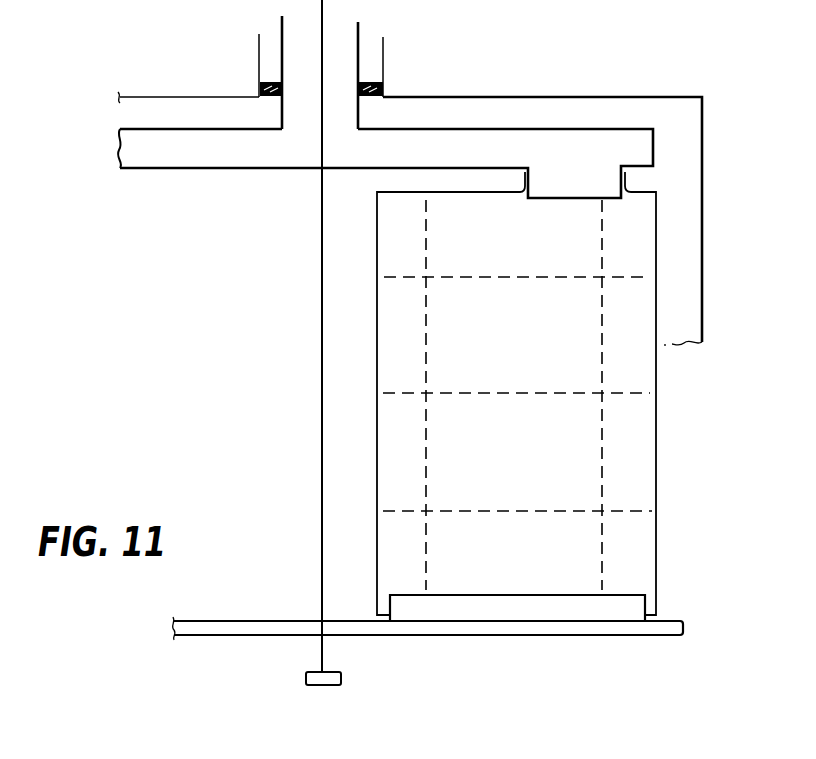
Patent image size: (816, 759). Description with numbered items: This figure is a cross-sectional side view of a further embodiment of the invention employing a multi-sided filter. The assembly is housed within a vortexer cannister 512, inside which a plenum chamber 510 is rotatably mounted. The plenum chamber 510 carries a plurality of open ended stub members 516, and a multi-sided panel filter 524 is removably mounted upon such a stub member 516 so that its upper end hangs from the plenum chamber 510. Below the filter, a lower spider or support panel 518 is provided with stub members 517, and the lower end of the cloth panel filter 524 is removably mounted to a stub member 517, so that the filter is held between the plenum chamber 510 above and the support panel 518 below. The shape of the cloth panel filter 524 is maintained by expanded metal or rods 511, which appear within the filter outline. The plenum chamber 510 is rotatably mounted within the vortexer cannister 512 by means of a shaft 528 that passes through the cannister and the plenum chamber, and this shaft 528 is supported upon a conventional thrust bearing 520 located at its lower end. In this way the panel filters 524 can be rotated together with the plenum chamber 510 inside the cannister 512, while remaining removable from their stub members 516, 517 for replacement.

The plenum chamber 510 is at (427, 138).
The expanded metal or rods 511 is at (405, 279).
The vortexer cannister 512 is at (608, 97).
The open ended stub member 516 is at (588, 183).
The stub member 517 is at (520, 607).
The lower spider or support panel 518 is at (385, 629).
The thrust bearing 520 is at (340, 683).
The multi-sided panel filter 524 is at (614, 368).
The shaft 528 is at (319, 361).